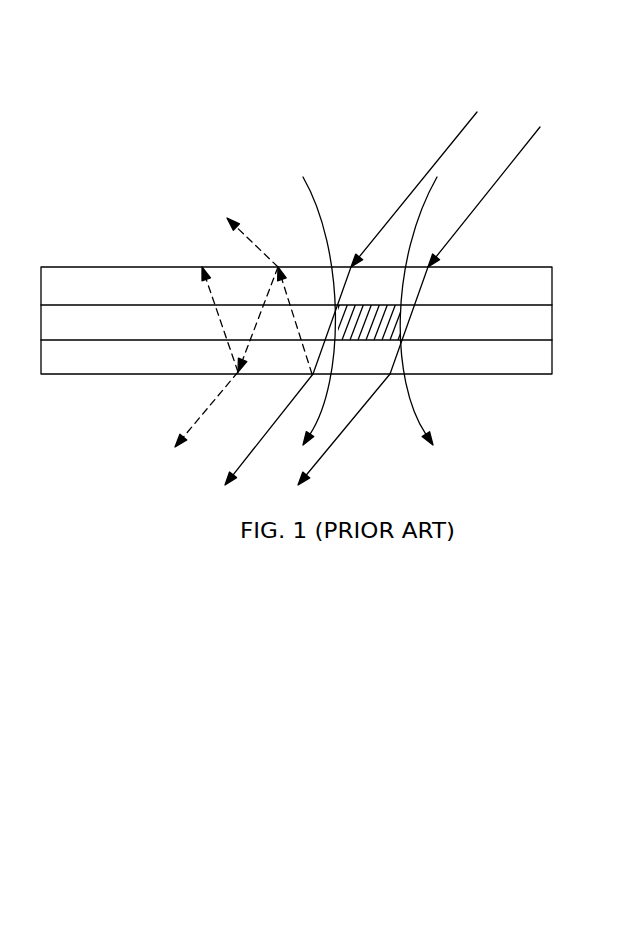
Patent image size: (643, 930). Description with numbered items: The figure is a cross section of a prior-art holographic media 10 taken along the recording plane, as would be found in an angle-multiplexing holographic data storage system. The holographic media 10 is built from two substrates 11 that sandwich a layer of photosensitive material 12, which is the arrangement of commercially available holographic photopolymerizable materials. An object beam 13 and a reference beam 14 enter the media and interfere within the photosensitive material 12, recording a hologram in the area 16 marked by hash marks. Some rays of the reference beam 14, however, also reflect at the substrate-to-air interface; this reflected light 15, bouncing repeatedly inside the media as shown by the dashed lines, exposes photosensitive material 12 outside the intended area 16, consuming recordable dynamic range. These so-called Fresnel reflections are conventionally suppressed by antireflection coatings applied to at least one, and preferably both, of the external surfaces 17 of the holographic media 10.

The holographic media 10 is at (555, 323).
The substrates 11 is at (100, 355).
The photosensitive material 12 is at (148, 322).
The object beam 13 is at (440, 163).
The reference beam 14 is at (405, 266).
The light 15 is at (298, 322).
The area 16 is at (375, 318).
The external surfaces 17 is at (153, 266).